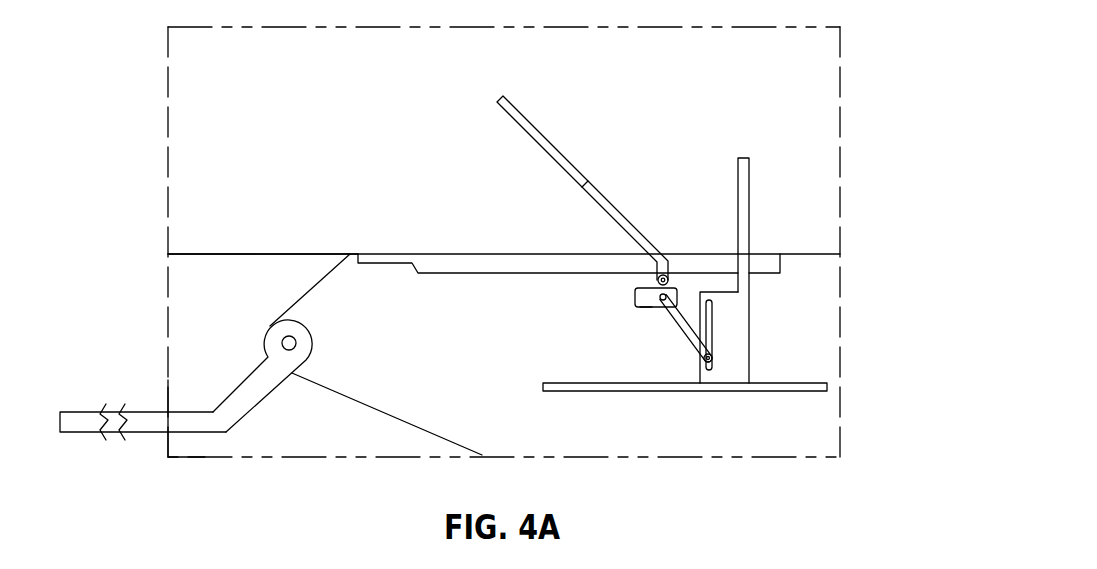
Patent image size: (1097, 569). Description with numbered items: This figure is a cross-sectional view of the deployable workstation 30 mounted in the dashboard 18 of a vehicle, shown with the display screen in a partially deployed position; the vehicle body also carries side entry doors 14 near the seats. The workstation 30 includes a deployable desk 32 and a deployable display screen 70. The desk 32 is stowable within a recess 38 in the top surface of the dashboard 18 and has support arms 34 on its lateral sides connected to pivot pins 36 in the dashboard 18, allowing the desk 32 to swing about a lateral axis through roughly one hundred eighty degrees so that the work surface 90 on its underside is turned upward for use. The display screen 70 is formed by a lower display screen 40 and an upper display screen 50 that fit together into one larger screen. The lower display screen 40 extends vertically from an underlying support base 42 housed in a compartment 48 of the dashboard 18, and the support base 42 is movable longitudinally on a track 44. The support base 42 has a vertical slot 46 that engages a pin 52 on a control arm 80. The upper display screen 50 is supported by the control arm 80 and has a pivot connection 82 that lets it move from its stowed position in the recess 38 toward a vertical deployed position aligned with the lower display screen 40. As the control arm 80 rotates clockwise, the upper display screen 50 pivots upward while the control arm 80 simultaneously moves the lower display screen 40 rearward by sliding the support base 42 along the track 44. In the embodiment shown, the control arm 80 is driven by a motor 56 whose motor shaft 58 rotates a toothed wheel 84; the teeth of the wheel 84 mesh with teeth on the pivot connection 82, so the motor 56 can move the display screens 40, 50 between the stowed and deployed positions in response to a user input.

The side entry door 14 is at (212, 252).
The dashboard 18 is at (815, 253).
The deployable workstation 30 is at (808, 124).
The deployable desk 32 is at (188, 433).
The support arm 34 is at (248, 387).
The pivot pin 36 is at (289, 336).
The recess 38 is at (705, 263).
The lower display screen 40 is at (740, 190).
The support base 42 is at (730, 317).
The track 44 is at (558, 387).
The vertical slot 46 is at (712, 341).
The compartment 48 is at (582, 342).
The upper display screen 50 is at (523, 128).
The pin 52 is at (713, 358).
The motor 56 is at (644, 307).
The motor shaft 58 is at (661, 300).
The deployable display screen 70 is at (755, 215).
The control arm 80 is at (708, 362).
The pivot connection 82 is at (668, 279).
The wheel 84 is at (683, 340).
The work surface 90 is at (150, 410).